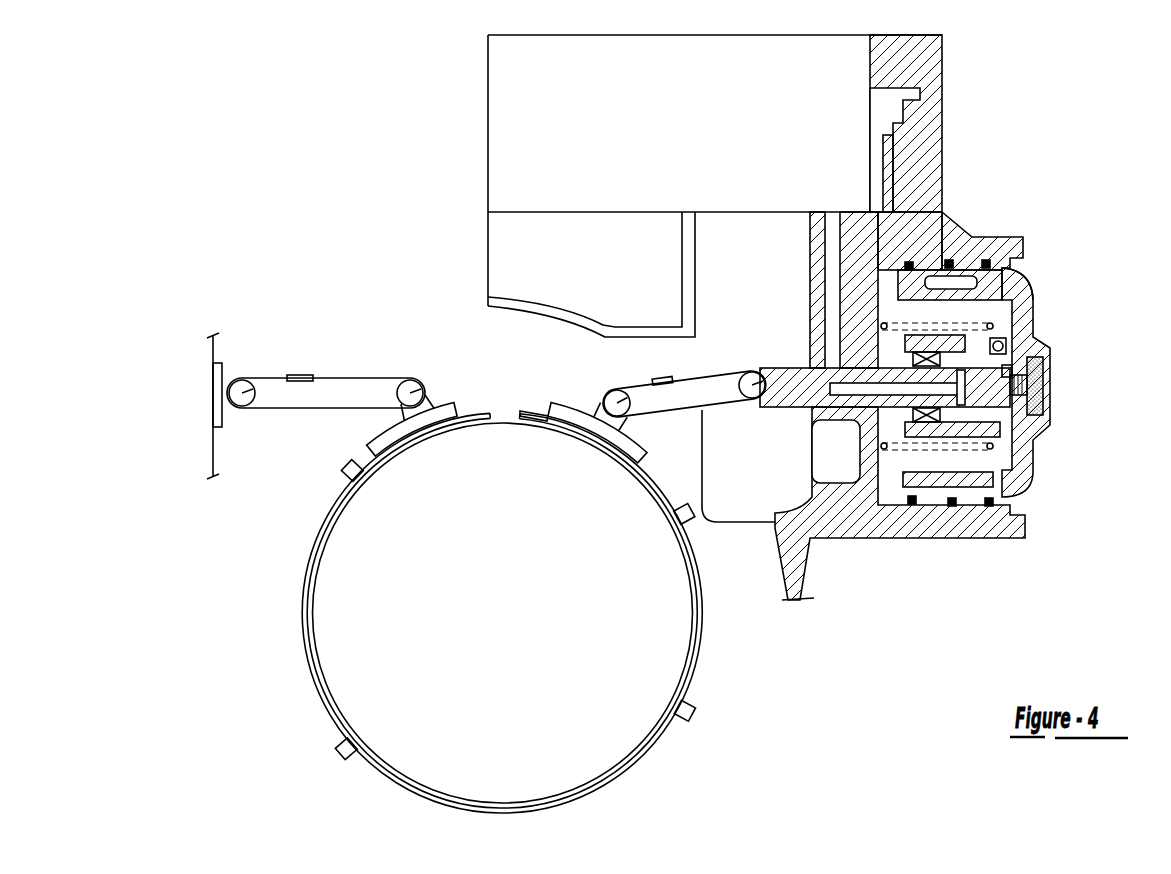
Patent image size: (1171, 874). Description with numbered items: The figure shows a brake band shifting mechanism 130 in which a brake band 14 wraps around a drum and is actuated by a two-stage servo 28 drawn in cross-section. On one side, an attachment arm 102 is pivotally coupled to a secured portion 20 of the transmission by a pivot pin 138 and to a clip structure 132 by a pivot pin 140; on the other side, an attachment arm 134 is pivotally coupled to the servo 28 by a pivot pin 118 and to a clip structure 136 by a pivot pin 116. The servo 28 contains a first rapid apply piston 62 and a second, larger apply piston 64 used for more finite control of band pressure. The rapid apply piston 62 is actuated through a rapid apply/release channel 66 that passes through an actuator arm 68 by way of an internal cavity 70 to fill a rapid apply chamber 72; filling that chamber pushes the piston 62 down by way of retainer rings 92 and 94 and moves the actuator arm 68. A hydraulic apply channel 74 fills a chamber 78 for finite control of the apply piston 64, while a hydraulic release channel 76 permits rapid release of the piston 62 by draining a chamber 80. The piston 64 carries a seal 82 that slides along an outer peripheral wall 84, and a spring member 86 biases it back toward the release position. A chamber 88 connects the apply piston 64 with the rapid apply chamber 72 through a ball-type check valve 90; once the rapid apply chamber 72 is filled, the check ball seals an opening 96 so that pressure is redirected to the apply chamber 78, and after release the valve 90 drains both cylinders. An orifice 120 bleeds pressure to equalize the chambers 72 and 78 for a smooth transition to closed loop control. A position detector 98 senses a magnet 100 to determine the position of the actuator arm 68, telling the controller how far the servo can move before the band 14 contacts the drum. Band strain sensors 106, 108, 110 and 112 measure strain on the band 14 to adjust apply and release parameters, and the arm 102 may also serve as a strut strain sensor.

The brake band 14 is at (603, 784).
The secured portion 20 is at (225, 366).
The two-stage servo 28 is at (1060, 257).
The rapid apply piston 62 is at (1002, 303).
The apply piston 64 is at (968, 275).
The rapid apply/release channel 66 is at (880, 283).
The actuator arm 68 is at (782, 367).
The internal cavity 70 is at (868, 382).
The rapid apply chamber 72 is at (1025, 420).
The hydraulic apply channel 74 is at (900, 58).
The hydraulic release channel 76 is at (876, 110).
The apply chamber 78 is at (1027, 280).
The chamber 80 is at (950, 262).
The seal 82 is at (912, 262).
The outer peripheral wall 84 is at (866, 262).
The spring member 86 is at (1013, 447).
The chamber 88 is at (977, 346).
The ball-type check valve 90 is at (1003, 346).
The retainer ring 92 is at (818, 280).
The retainer ring 94 is at (955, 408).
The opening 96 is at (1012, 377).
The position detector 98 is at (1037, 400).
The magnet 100 is at (1022, 387).
The attachment arm 102 is at (298, 374).
The band strain sensor 106 is at (688, 717).
The band strain sensor 108 is at (690, 526).
The band strain sensor 110 is at (348, 462).
The band strain sensor 112 is at (352, 752).
The pivot pin 116 is at (604, 398).
The pivot pin 118 is at (748, 373).
The orifice 120 is at (985, 515).
The brake band shifting mechanism 130 is at (290, 518).
The clip structure 132 is at (488, 410).
The attachment arm 134 is at (660, 375).
The clip structure 136 is at (553, 406).
The pivot pin 138 is at (256, 381).
The pivot pin 140 is at (426, 396).